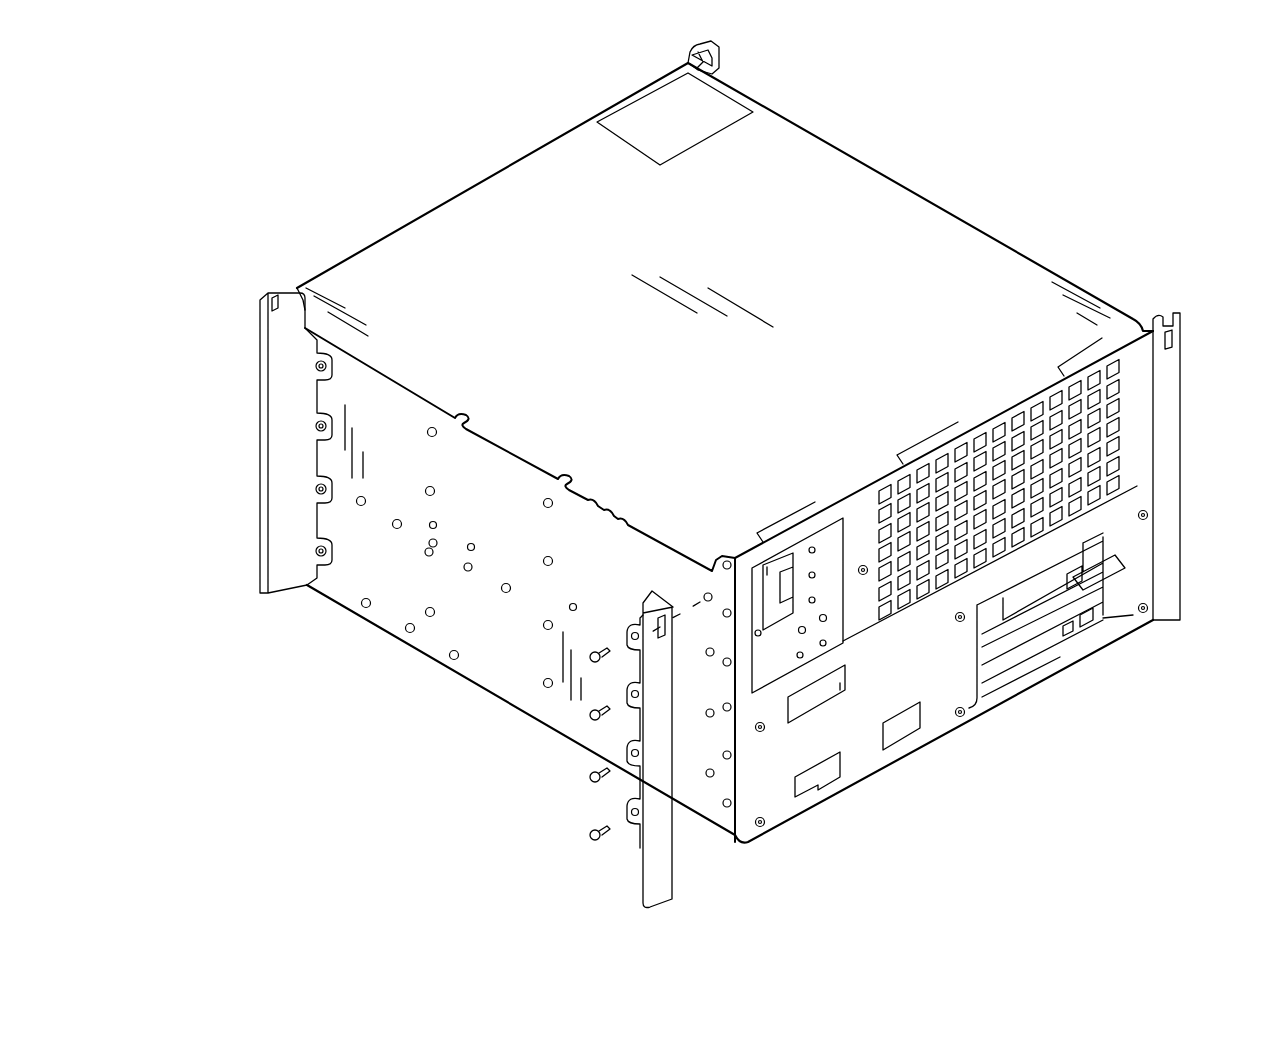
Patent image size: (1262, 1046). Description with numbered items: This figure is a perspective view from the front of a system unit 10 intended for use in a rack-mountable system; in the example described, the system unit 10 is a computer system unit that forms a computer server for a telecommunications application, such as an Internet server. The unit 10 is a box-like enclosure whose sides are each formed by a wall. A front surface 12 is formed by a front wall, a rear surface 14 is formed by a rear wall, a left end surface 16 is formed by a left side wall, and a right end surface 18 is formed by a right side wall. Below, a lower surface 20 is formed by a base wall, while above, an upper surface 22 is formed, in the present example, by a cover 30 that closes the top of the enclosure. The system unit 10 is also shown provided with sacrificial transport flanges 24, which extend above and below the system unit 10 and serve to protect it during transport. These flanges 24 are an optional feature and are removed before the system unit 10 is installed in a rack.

The system unit 10 is at (1245, 676).
The front surface 12 is at (1032, 728).
The rear surface 14 is at (420, 168).
The left end surface 16 is at (445, 722).
The right end surface 18 is at (925, 145).
The lower surface 20 is at (822, 842).
The upper surface 22 is at (675, 119).
The sacrificial transport flanges 24 is at (722, 60).
The cover 30 is at (595, 98).